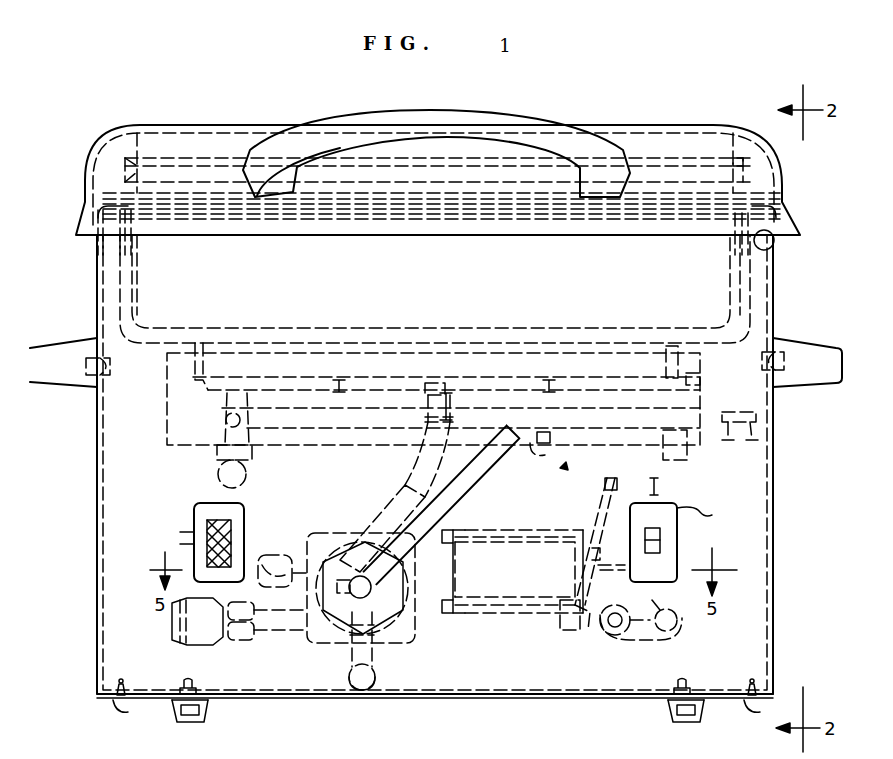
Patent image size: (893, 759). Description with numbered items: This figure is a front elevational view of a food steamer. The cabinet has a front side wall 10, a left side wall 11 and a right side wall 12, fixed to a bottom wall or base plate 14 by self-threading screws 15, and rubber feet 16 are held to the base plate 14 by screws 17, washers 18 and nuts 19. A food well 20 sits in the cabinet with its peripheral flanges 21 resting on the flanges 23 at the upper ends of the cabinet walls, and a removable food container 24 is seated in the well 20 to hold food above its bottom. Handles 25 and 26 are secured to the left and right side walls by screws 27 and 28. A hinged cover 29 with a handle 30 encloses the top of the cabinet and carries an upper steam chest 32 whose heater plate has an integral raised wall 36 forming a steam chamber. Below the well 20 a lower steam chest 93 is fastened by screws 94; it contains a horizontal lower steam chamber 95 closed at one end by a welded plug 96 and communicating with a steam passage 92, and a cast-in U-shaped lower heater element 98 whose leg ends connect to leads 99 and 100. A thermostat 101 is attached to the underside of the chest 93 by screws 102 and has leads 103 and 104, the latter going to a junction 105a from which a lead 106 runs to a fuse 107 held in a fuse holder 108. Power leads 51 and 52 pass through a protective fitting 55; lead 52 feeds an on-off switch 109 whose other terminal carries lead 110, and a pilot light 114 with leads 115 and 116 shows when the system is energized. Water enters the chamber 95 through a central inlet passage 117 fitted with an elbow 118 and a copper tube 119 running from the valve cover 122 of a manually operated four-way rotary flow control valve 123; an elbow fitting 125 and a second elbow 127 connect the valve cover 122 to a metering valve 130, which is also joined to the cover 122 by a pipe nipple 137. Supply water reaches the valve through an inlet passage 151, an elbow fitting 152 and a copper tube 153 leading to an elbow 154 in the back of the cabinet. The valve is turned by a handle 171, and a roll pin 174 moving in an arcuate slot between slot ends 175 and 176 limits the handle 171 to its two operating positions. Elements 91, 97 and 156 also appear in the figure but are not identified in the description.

The front side wall 10 is at (110, 655).
The left side wall 11 is at (97, 633).
The right side wall 12 is at (776, 660).
The bottom wall or base plate 14 is at (400, 700).
The self-threading screws 15 is at (755, 700).
The rubber pads or feet 16 is at (695, 708).
The screws 17 is at (690, 718).
The washers 18 is at (665, 710).
The nuts 19 is at (698, 686).
The food well 20 is at (744, 300).
The peripheral flanges 21 is at (785, 207).
The flanges 23 is at (772, 242).
The food container 24 is at (734, 262).
The handle 25 is at (75, 352).
The handle 26 is at (832, 348).
The screws 27 is at (113, 367).
The screws 28 is at (764, 368).
The cover 29 is at (648, 124).
The handle 30 is at (502, 120).
The upper steam receiving and discharge chest 32 is at (185, 154).
The integral raised wall 36 is at (675, 165).
The lead 51 is at (606, 640).
The lead 52 is at (665, 605).
The protective fitting 55 is at (672, 623).
The pump 91 is at (218, 478).
The steam passage or bore 92 is at (222, 424).
The lower steam chest 93 is at (168, 404).
The screws 94 is at (683, 345).
The lower steam chamber 95 is at (430, 388).
The welded plug 96 is at (700, 383).
The pipe clamp 97 is at (548, 388).
The lower heater element 98 is at (309, 406).
The lead 99 is at (740, 441).
The lead 100 is at (752, 425).
The thermostat 101 is at (562, 472).
The screws 102 is at (680, 455).
The lead 103 is at (660, 486).
The lead 104 is at (604, 483).
The junction 105a is at (588, 507).
The lead 106 is at (597, 540).
The fuse 107 is at (560, 630).
The fuse holder 108 is at (590, 640).
The on-off power switch 109 is at (676, 540).
The lead 110 is at (711, 513).
The pilot or signal light 114 is at (195, 509).
The lead 115 is at (250, 532).
The lead 116 is at (194, 538).
The water inlet bore or passage 117 is at (452, 404).
The elbow fitting 118 is at (420, 460).
The copper tube 119 is at (395, 496).
The valve cover 122 is at (308, 535).
The four-way rotary flow control valve 123 is at (330, 533).
The brass elbow tube fitting 125 is at (268, 579).
The second brass elbow fitting 127 is at (612, 572).
The metering valve 130 is at (507, 614).
The pipe nipple 137 is at (470, 570).
The water inlet passage 151 is at (350, 650).
The brass elbow fitting 152 is at (382, 680).
The copper tube 153 is at (264, 627).
The elbow 154 is at (195, 640).
The drive wheel 156 is at (628, 612).
The valve handle 171 is at (468, 480).
The roll pin 174 is at (346, 593).
The slot end 175 is at (362, 588).
The slot end 176 is at (372, 591).